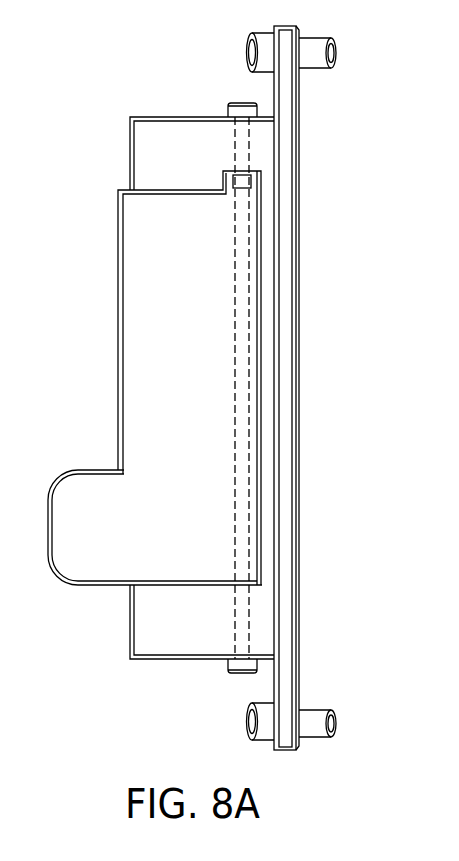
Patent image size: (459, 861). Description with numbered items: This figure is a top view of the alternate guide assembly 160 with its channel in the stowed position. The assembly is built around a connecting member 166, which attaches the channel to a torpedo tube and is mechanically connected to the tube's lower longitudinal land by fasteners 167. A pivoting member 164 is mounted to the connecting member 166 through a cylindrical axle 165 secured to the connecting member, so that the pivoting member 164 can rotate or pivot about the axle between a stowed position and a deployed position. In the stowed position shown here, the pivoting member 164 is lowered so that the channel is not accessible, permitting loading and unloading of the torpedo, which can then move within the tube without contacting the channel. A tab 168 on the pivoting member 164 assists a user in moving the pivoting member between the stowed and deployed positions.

The guide assembly 160 is at (360, 419).
The pivoting member 164 is at (118, 343).
The cylindrical axle 165 is at (250, 274).
The connecting member 166 is at (172, 656).
The fasteners 167 is at (317, 69).
The tab 168 is at (53, 570).